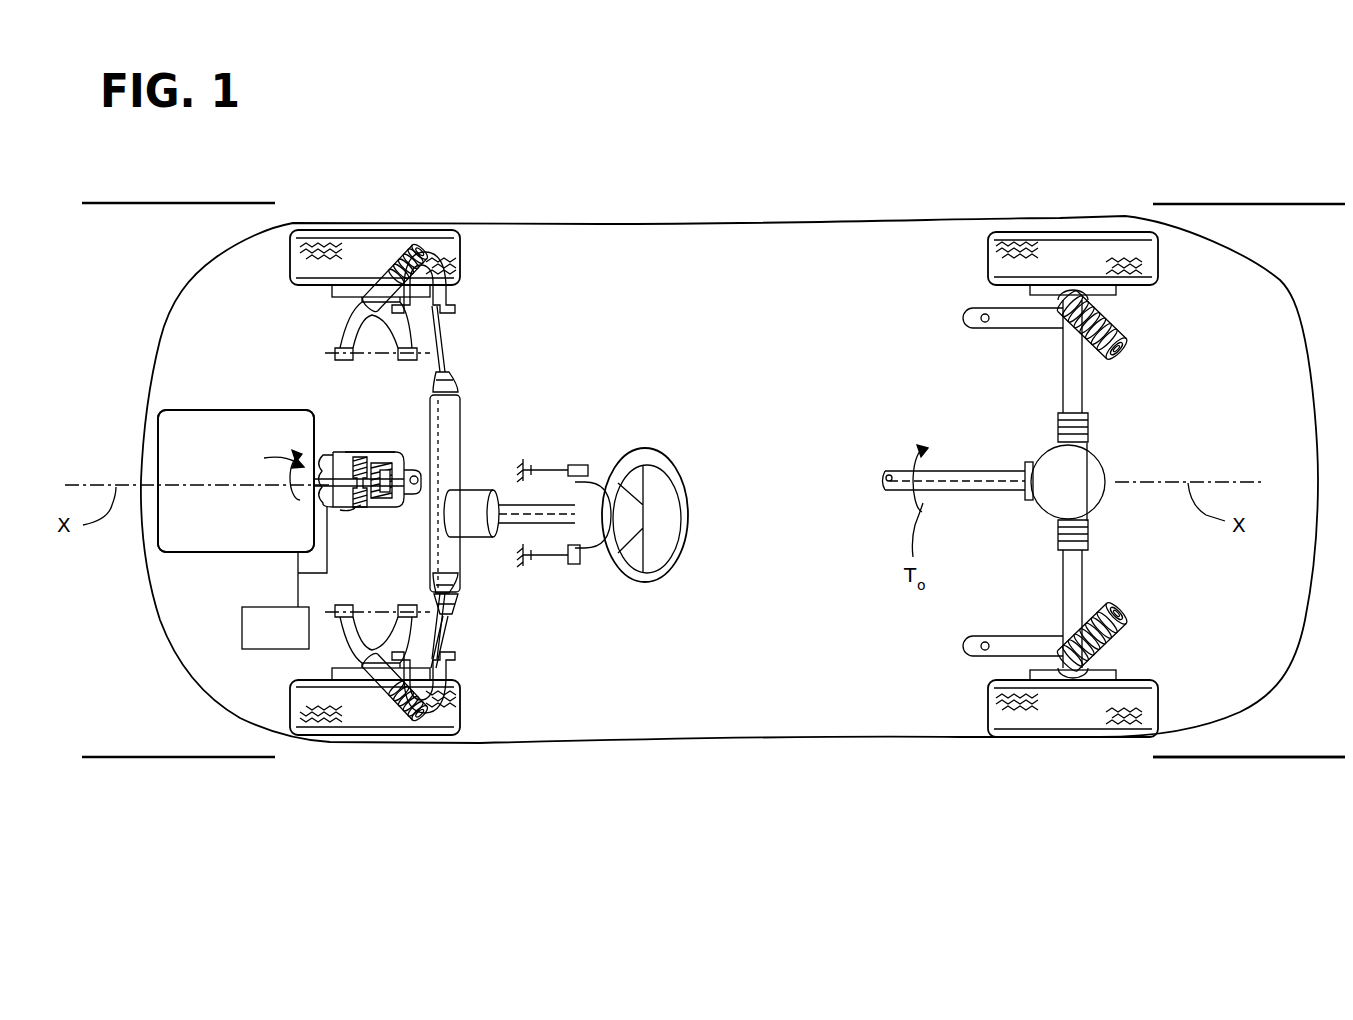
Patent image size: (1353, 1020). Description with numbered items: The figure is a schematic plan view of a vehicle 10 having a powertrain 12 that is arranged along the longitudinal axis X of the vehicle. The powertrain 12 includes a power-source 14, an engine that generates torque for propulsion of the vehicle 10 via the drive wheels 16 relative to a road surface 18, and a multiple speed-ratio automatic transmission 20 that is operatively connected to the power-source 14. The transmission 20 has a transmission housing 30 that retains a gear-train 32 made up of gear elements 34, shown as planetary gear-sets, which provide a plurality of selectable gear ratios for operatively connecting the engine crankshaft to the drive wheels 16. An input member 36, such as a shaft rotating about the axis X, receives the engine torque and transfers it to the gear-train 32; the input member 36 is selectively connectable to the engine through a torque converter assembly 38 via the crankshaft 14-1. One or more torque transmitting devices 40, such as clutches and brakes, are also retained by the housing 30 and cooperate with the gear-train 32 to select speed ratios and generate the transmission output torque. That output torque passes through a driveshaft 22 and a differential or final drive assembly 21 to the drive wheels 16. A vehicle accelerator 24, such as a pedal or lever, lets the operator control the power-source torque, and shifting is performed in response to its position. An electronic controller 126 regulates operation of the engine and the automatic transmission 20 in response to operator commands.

The vehicle 10 is at (1070, 146).
The powertrain 12 is at (192, 553).
The power-source 14 is at (203, 423).
The crankshaft 14-1 is at (308, 498).
The drive wheels 16 is at (1070, 233).
The road surface 18 is at (1319, 728).
The automatic transmission 20 is at (350, 446).
The final drive assembly 21 is at (1097, 462).
The driveshaft 22 is at (415, 494).
The vehicle accelerator 24 is at (578, 464).
The transmission housing 30 is at (357, 510).
The gear-train 32 is at (374, 508).
The gear elements 34 is at (388, 458).
The input member 36 is at (352, 510).
The torque converter assembly 38 is at (326, 452).
The torque transmitting devices 40 is at (364, 452).
The electronic controller 126 is at (295, 639).